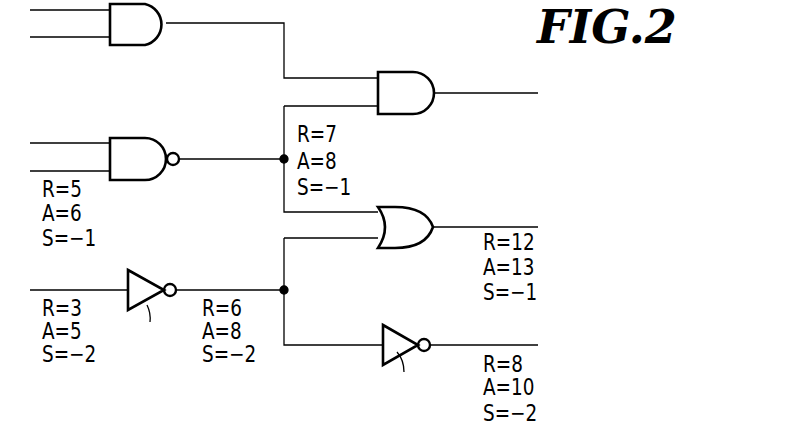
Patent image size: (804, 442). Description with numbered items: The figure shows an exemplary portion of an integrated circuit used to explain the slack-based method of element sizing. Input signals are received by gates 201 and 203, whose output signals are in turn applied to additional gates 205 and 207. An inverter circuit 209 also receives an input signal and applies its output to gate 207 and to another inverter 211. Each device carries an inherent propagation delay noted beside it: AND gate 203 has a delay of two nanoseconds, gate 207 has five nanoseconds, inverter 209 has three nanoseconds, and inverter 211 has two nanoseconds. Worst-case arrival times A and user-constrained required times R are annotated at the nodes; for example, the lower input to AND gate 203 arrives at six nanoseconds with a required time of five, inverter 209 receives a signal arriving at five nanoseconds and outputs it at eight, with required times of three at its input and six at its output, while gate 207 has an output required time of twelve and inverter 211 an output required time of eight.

The gate 201 is at (143, 47).
The AND gate 203 is at (137, 137).
The gate 205 is at (403, 71).
The gate 207 is at (403, 203).
The inverter circuit 209 is at (142, 275).
The inverter 211 is at (393, 325).